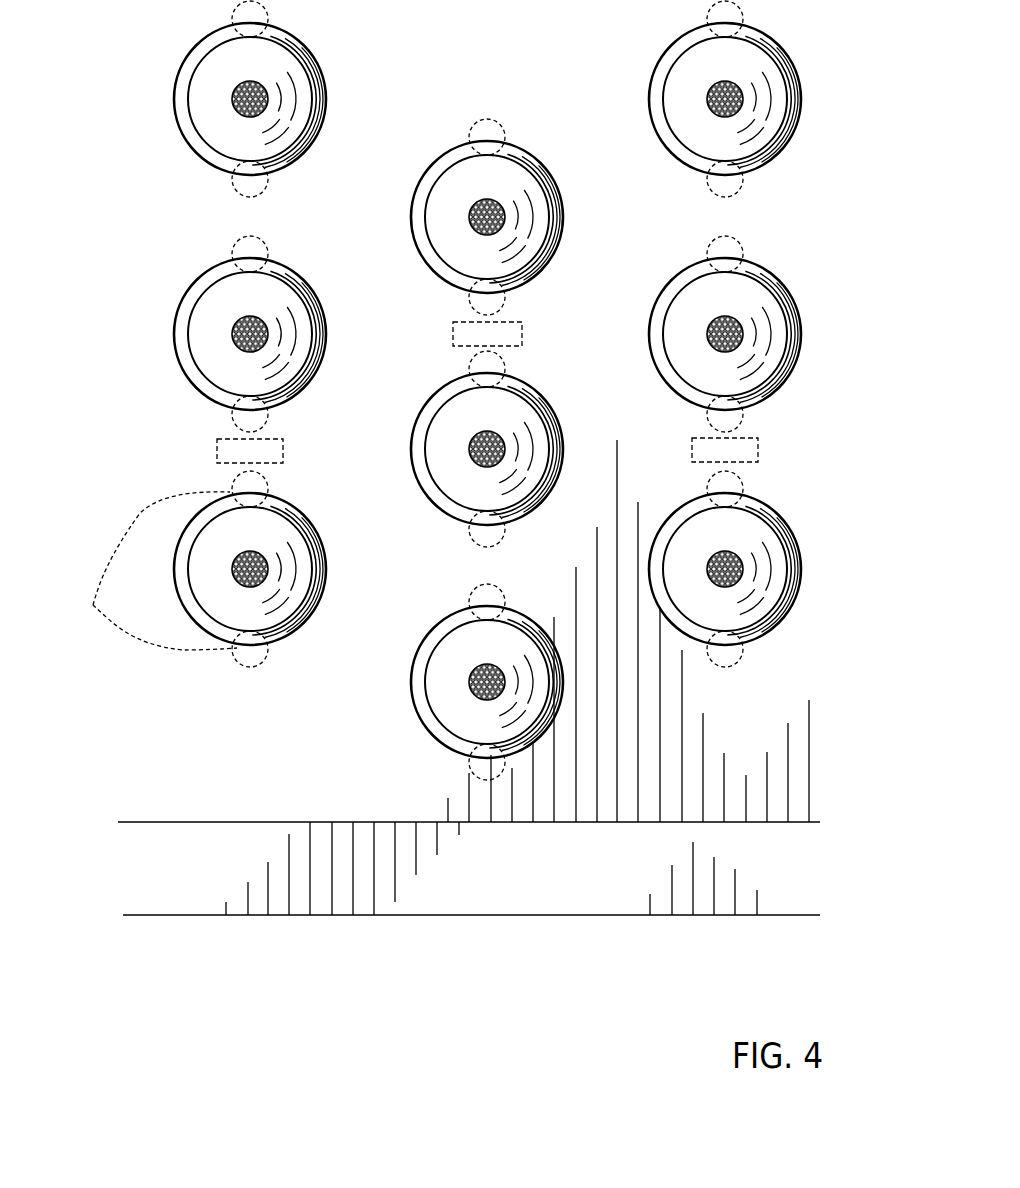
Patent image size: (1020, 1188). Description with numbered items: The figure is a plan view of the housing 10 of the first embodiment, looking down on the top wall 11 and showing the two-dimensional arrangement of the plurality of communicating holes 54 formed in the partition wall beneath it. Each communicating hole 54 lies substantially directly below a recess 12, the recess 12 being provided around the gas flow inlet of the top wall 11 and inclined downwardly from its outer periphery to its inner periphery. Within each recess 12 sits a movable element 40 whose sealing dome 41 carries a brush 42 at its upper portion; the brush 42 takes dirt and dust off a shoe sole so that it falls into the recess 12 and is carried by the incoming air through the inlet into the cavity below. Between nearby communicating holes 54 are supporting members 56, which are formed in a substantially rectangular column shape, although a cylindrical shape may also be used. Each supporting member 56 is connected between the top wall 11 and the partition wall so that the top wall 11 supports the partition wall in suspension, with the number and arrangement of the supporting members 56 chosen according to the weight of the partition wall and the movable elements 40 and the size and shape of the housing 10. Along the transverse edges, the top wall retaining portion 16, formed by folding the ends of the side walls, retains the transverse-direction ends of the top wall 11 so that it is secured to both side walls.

The housing 10 is at (438, 738).
The top wall 11 is at (157, 745).
The recess 12 is at (245, 591).
The top wall retaining portion 16 is at (192, 877).
The movable element 40 is at (303, 528).
The sealing dome 41 is at (298, 600).
The brush 42 is at (265, 581).
The communicating hole 54 is at (150, 571).
The supporting member 56 is at (217, 461).